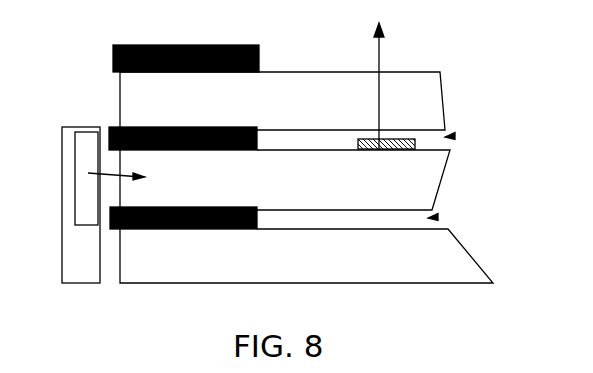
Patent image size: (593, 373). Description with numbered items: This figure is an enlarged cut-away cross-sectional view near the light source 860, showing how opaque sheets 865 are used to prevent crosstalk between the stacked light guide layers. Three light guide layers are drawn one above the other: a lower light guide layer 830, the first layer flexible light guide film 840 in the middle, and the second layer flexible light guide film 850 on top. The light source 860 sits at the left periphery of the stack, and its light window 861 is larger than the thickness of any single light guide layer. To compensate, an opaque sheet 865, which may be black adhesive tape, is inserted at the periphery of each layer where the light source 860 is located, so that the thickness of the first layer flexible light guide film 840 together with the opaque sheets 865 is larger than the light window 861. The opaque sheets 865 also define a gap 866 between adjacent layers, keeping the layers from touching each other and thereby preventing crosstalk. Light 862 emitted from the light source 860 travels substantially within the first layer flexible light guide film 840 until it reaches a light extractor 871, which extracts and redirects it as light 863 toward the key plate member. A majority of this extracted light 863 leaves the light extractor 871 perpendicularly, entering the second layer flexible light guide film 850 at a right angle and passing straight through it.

The light guide layer 830 is at (353, 265).
The first layer flexible light guide film 840 is at (303, 194).
The second layer flexible light guide film 850 is at (354, 106).
The light source 860 is at (92, 275).
The light window 861 is at (88, 174).
The light 862 is at (142, 172).
The extracted light 863 is at (380, 41).
The opaque sheet 865 is at (259, 56).
The gap 866 is at (455, 136).
The light extractor 871 is at (390, 150).